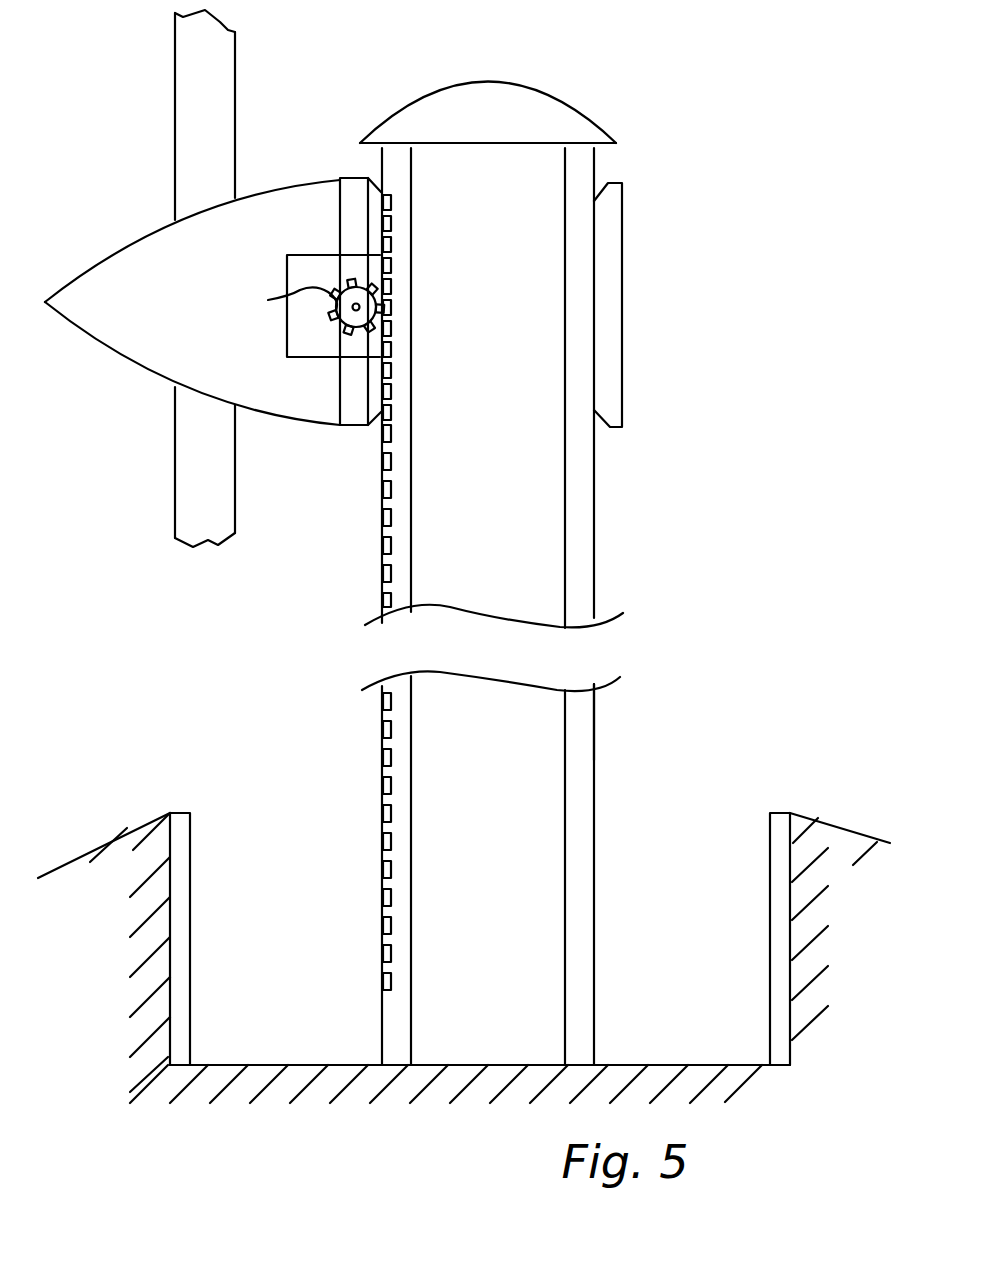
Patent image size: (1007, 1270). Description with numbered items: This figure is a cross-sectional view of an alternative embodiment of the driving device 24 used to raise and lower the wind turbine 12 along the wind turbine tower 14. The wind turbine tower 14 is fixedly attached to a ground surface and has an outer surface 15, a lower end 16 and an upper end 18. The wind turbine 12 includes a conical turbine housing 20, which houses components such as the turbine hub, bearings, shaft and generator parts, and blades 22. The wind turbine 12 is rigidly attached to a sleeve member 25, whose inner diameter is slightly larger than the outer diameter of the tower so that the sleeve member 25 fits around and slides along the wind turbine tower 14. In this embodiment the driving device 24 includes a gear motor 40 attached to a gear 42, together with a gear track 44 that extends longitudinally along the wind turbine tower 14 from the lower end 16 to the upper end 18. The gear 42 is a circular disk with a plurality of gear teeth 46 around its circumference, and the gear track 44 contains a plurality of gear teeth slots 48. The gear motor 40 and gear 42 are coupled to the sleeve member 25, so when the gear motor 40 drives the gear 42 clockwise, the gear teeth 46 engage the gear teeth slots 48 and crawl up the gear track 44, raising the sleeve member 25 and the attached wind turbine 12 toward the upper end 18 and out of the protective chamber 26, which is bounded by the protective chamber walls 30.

The wind turbine 12 is at (138, 212).
The wind turbine tower 14 is at (580, 762).
The outer surface 15 is at (594, 731).
The lower end 16 is at (520, 1043).
The upper end 18 is at (552, 168).
The conical turbine housing 20 is at (152, 355).
The blades 22 is at (188, 83).
The driving device 24 is at (325, 410).
The sleeve member 25 is at (608, 350).
The protective chamber 26 is at (220, 850).
The protective chamber walls 30 is at (178, 908).
The gear motor 40 is at (296, 340).
The gear 42 is at (347, 285).
The gear track 44 is at (440, 352).
The gear teeth 46 is at (285, 314).
The gear teeth slots 48 is at (393, 390).